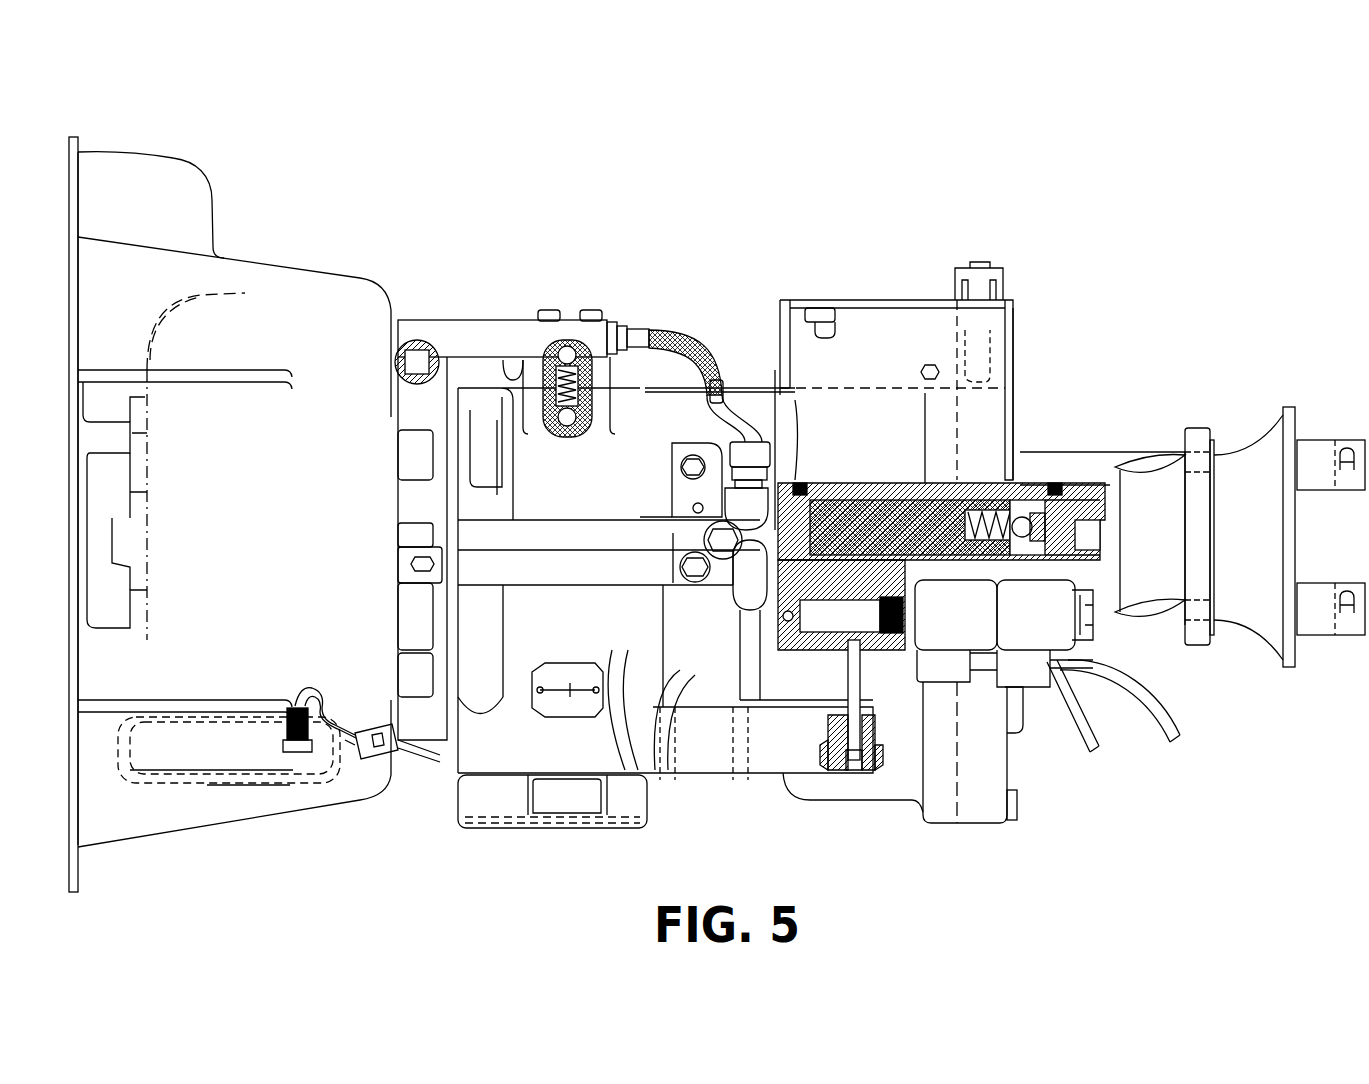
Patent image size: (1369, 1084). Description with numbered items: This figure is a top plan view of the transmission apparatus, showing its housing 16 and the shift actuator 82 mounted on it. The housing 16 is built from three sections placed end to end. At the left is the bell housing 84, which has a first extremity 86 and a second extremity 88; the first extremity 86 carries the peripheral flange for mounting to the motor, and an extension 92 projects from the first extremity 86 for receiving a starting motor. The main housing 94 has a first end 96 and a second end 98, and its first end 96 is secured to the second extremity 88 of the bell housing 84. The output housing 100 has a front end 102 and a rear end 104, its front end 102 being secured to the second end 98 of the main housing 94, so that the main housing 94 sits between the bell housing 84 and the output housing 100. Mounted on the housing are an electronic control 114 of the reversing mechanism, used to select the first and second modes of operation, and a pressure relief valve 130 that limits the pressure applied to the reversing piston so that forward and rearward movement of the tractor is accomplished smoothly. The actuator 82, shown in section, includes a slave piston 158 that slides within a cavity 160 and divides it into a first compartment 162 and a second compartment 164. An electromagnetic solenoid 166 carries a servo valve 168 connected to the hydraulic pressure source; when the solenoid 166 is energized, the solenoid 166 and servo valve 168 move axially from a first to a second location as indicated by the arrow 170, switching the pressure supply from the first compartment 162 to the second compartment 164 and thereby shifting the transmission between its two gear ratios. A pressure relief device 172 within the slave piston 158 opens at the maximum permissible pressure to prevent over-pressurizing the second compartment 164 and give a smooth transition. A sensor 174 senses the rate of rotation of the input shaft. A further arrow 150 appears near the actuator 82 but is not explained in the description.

The housing 16 is at (431, 257).
The actuator 82 is at (895, 420).
The bell housing 84 is at (318, 283).
The first extremity 86 is at (72, 170).
The second extremity 88 is at (387, 710).
The extension 92 is at (145, 175).
The main housing 94 is at (647, 623).
The first end 96 is at (388, 417).
The second end 98 is at (750, 325).
The output housing 100 is at (945, 420).
The front end 102 is at (822, 427).
The rear end 104 is at (1193, 427).
The electronic control 114 is at (567, 805).
The pressure relief valve 130 is at (530, 335).
The direction arrow 150 is at (935, 155).
The slave piston 158 is at (940, 507).
The cavity 160 is at (917, 580).
The first compartment 162 is at (817, 680).
The second compartment 164 is at (1078, 563).
The electromagnetic solenoid 166 is at (977, 625).
The servo valve 168 is at (838, 763).
The arrow 170 is at (1043, 800).
The pressure relief device 172 is at (1068, 490).
The sensor 174 is at (282, 730).